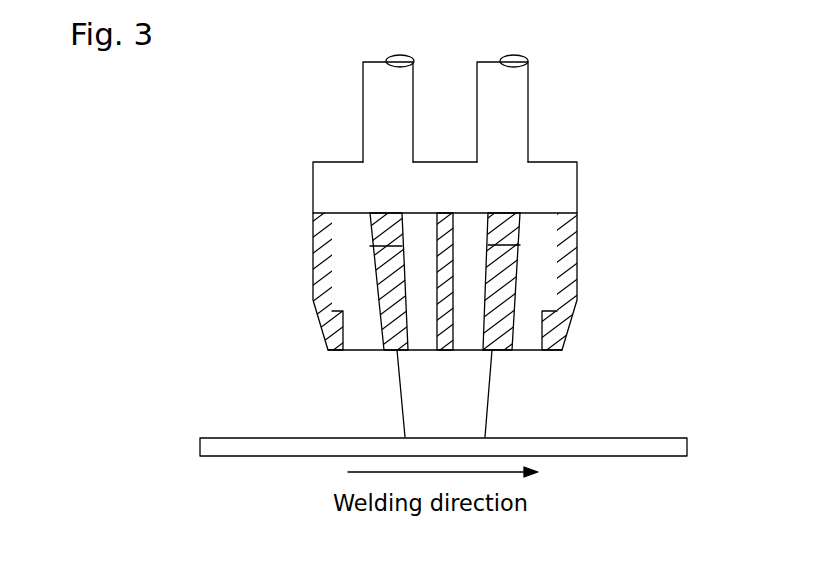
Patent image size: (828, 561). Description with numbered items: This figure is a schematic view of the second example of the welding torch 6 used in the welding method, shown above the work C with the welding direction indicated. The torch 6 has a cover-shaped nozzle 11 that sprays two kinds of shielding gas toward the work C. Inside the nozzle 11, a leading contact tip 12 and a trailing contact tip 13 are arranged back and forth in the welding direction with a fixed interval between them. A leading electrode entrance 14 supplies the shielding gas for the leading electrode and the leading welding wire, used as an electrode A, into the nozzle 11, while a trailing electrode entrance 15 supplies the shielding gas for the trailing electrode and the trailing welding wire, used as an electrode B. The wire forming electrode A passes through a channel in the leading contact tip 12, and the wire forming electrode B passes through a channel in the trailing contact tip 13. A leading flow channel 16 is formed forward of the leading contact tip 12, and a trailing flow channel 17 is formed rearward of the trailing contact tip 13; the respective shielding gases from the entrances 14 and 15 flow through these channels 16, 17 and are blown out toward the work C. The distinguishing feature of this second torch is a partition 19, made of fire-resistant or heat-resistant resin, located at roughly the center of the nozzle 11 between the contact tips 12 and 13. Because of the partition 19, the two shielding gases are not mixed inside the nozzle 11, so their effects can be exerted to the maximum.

The welding torch 6 is at (599, 134).
The nozzle 11 is at (563, 188).
The leading contact tip 12 is at (470, 300).
The trailing contact tip 13 is at (413, 301).
The leading electrode entrance 14 is at (518, 95).
The trailing electrode entrance 15 is at (375, 117).
The leading flow channel 16 is at (483, 311).
The trailing flow channel 17 is at (403, 310).
The partition 19 is at (448, 360).
The electrode A is at (490, 387).
The electrode B is at (397, 387).
The work C is at (613, 443).